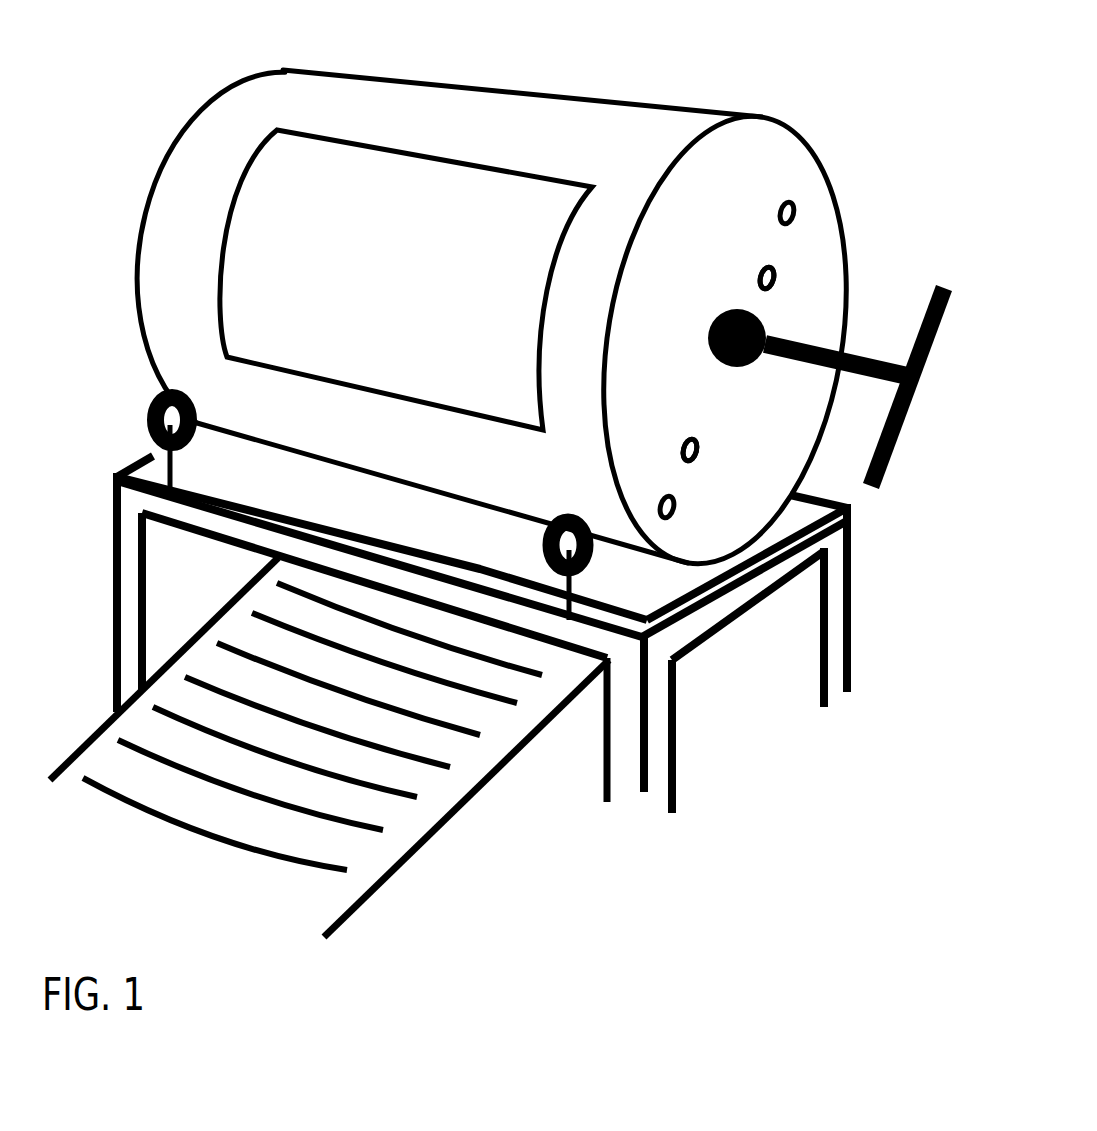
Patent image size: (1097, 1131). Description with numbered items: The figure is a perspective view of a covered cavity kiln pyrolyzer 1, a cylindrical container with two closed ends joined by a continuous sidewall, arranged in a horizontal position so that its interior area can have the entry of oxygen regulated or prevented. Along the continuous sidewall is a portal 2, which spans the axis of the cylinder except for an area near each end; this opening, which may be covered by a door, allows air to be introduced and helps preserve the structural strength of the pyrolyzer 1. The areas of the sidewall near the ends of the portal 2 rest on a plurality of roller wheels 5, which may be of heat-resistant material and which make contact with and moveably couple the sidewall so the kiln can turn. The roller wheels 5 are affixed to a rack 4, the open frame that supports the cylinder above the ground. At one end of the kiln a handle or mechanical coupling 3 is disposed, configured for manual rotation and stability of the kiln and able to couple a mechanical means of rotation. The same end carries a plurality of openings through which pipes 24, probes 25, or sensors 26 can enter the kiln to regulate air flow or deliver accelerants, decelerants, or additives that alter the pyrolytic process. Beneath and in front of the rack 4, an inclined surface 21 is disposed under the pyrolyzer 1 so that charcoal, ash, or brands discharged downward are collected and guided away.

The covered cavity kiln pyrolyzer 1 is at (917, 918).
The portal 2 is at (410, 180).
The handles or mechanical couplings 3 is at (915, 434).
The rack 4 is at (815, 631).
The roller wheels 5 is at (149, 391).
The inclined surface 21 is at (458, 832).
The pipes 24 is at (783, 256).
The probes 25 is at (767, 278).
The sensors 26 is at (690, 450).